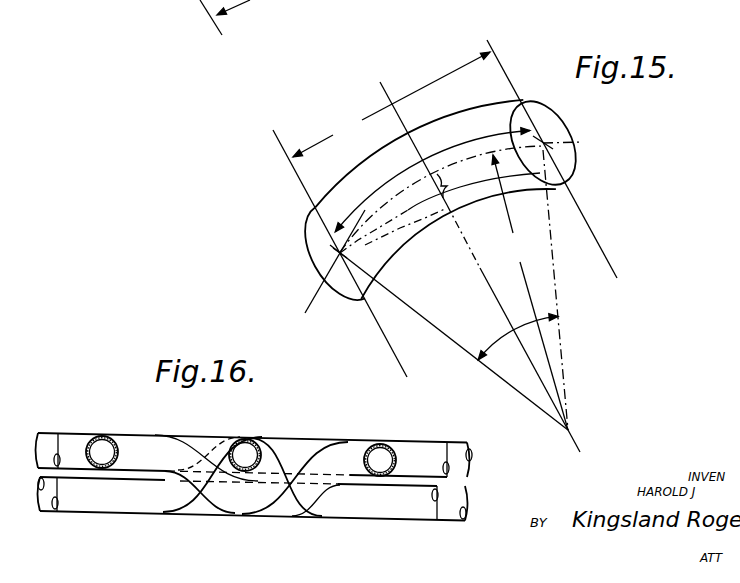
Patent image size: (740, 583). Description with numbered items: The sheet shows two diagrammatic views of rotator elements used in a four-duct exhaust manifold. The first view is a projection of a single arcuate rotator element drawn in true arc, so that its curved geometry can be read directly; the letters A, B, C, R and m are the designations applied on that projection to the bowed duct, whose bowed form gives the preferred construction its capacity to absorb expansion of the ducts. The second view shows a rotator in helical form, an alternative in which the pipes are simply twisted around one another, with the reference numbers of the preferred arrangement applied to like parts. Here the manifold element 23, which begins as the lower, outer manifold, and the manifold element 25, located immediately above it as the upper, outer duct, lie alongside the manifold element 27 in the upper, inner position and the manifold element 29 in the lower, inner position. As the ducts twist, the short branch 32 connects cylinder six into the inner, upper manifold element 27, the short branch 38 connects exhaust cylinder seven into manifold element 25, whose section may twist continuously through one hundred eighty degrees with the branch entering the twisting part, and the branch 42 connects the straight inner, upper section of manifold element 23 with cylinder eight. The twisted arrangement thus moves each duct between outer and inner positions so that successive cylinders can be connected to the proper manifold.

In FIG. 16, the manifold element 23 is at (47, 512).
In FIG. 16, the manifold element 25 is at (48, 440).
In FIG. 16, the manifold element 27 is at (77, 440).
In FIG. 16, the manifold element 29 is at (302, 440).
In FIG. 16, the short branch 32 is at (113, 437).
In FIG. 16, the short branch 38 is at (258, 440).
In FIG. 16, the branch 42 is at (395, 446).
In FIG. 15, the arc length A is at (382, 200).
In FIG. 15, the bend angle B is at (504, 354).
In FIG. 15, the chord length C is at (354, 136).
In FIG. 15, the bend radius R is at (522, 256).
In FIG. 15, the offset m is at (461, 190).